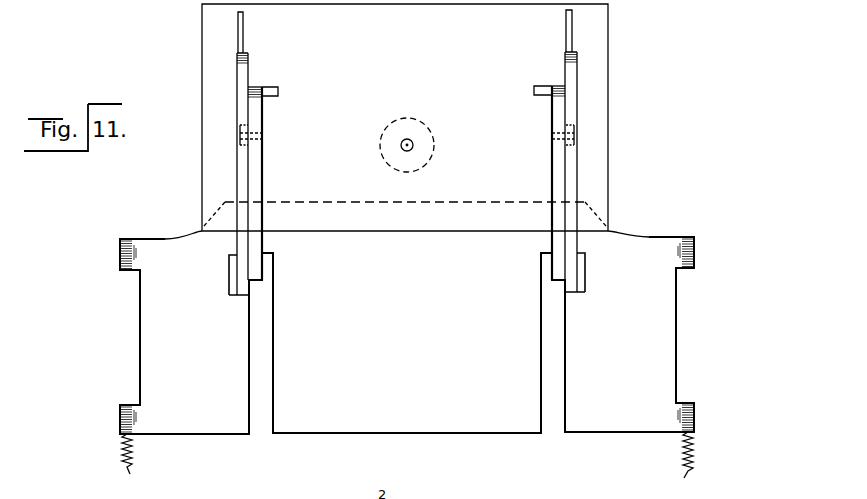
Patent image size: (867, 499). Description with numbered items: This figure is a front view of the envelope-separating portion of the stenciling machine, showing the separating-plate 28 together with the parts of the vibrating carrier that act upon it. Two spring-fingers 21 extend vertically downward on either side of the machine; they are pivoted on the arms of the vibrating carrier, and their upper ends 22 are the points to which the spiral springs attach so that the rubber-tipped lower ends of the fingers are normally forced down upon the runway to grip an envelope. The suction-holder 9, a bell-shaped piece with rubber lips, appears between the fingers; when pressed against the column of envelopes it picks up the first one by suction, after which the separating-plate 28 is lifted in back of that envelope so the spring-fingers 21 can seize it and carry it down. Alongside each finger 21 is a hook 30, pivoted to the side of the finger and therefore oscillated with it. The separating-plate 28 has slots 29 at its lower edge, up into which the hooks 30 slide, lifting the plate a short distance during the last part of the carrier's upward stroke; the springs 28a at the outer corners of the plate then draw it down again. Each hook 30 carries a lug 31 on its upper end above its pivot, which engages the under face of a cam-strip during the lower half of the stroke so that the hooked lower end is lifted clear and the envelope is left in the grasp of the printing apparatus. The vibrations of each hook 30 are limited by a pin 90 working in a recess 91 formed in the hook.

The suction-holder 9 is at (422, 152).
The spring-fingers 21 is at (583, 106).
The upper ends of the fingers 22 is at (578, 33).
The separating-plate 28 is at (407, 332).
The springs 28a is at (415, 465).
The slots 29 is at (562, 415).
The hooks 30 is at (540, 168).
The lugs 31 is at (527, 105).
The pin 90 is at (545, 136).
The recess 91 is at (512, 158).